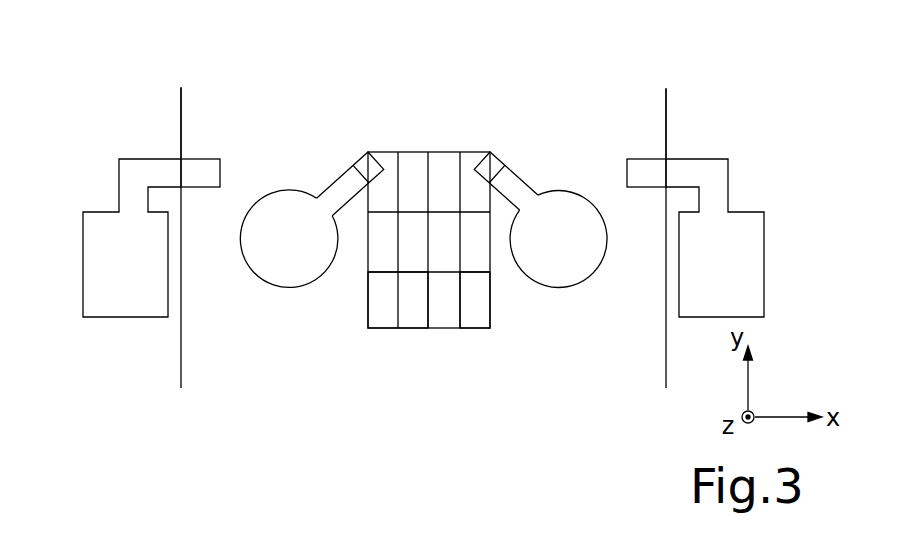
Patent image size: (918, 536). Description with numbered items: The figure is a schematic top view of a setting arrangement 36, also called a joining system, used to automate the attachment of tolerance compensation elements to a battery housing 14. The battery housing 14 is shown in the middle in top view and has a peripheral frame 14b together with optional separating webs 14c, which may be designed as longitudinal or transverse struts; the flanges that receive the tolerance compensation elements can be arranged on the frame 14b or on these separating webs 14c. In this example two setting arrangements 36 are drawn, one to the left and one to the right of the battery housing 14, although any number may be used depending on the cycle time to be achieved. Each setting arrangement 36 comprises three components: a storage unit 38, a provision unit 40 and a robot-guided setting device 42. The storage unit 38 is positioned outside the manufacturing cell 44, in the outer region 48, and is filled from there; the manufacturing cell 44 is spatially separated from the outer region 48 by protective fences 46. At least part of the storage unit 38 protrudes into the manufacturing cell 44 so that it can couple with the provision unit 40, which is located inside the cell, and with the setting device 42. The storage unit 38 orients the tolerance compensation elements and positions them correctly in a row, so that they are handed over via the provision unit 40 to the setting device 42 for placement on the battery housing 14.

The battery housing 14 is at (442, 283).
The peripheral frame 14b is at (490, 307).
The separating web 14c is at (397, 304).
The setting arrangement 36 is at (195, 94).
The storage unit 38 is at (106, 219).
The provision unit 40 is at (216, 135).
The robot-guided setting device 42 is at (298, 167).
The manufacturing cell 44 is at (442, 262).
The protective fence 46 is at (181, 116).
The outer region 48 is at (442, 192).